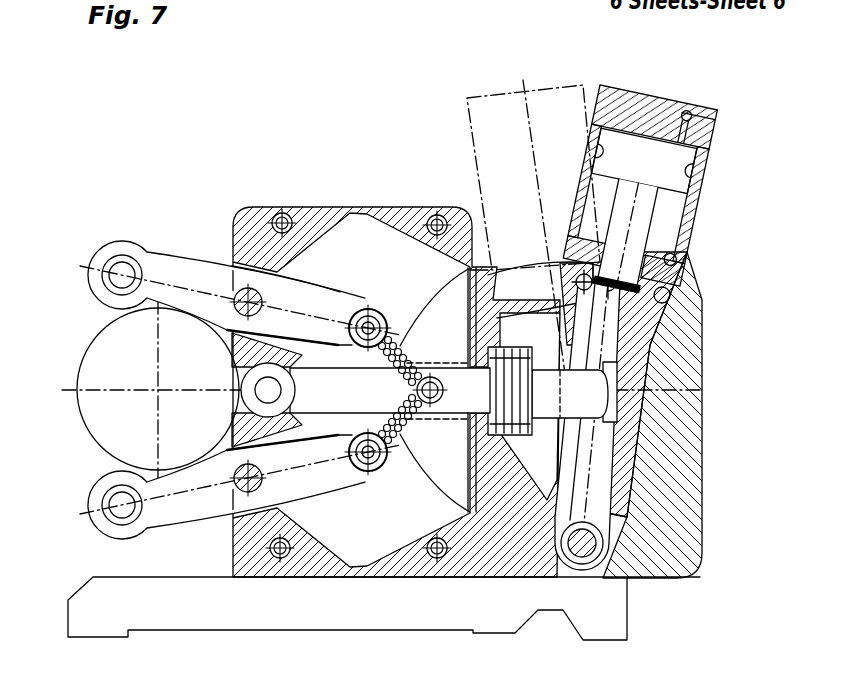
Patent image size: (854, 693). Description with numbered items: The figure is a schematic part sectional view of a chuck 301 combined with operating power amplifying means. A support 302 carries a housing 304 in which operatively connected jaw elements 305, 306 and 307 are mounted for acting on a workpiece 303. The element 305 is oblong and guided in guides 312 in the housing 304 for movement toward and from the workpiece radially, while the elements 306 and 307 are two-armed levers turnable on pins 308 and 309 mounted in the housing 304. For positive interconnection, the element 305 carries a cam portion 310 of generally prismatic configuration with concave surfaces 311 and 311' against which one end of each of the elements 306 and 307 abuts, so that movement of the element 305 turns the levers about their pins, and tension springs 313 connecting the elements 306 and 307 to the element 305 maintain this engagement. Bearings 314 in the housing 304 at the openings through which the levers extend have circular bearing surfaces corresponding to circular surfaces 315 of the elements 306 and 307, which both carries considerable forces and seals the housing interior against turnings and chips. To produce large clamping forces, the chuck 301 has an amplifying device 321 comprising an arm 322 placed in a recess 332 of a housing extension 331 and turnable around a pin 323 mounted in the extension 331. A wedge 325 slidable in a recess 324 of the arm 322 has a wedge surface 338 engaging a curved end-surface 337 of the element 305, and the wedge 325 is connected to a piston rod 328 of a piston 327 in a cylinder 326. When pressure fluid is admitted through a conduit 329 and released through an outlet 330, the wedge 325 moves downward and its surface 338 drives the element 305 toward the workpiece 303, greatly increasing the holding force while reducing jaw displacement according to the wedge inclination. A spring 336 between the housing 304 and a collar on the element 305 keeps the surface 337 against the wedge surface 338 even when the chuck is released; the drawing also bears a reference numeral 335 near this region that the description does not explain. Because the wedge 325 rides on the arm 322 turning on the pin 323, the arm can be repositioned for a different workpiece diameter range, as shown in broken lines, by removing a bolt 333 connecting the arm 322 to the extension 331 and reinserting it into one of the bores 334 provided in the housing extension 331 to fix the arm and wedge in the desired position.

The chuck 301 is at (203, 138).
The support 302 is at (86, 602).
The workpiece 303 is at (115, 343).
The housing 304 is at (253, 559).
The jaw element 305 is at (311, 404).
The jaw element 306 is at (165, 508).
The jaw element 307 is at (152, 263).
The pin 308 is at (237, 491).
The pin 309 is at (243, 262).
The cam portion 310 is at (458, 480).
The concave surface 311 is at (390, 518).
The concave surface 311' is at (433, 344).
The guides 312 is at (430, 377).
The tension springs 313 is at (405, 343).
The bearings 314 is at (236, 286).
The circular surfaces 315 is at (252, 291).
The amplifying device 321 is at (693, 281).
The arm 322 is at (637, 393).
The pin 323 is at (586, 560).
The recess 324 is at (602, 472).
The wedge 325 is at (615, 410).
The cylinder 326 is at (705, 188).
The piston 327 is at (668, 168).
The piston rod 328 is at (640, 222).
The conduit 329 is at (695, 115).
The outlet 330 is at (675, 248).
The housing extension 331 is at (655, 540).
The recess 332 is at (572, 470).
The bolt 333 is at (670, 300).
The bores 334 is at (572, 264).
The push rod 335 is at (548, 430).
The spring 336 is at (505, 440).
The curved end-surface 337 is at (606, 368).
The wedge surface 338 is at (476, 290).